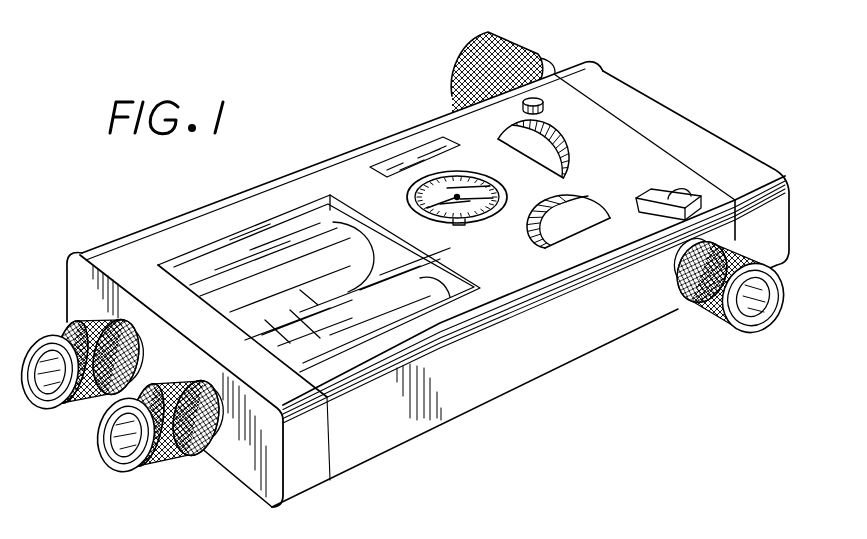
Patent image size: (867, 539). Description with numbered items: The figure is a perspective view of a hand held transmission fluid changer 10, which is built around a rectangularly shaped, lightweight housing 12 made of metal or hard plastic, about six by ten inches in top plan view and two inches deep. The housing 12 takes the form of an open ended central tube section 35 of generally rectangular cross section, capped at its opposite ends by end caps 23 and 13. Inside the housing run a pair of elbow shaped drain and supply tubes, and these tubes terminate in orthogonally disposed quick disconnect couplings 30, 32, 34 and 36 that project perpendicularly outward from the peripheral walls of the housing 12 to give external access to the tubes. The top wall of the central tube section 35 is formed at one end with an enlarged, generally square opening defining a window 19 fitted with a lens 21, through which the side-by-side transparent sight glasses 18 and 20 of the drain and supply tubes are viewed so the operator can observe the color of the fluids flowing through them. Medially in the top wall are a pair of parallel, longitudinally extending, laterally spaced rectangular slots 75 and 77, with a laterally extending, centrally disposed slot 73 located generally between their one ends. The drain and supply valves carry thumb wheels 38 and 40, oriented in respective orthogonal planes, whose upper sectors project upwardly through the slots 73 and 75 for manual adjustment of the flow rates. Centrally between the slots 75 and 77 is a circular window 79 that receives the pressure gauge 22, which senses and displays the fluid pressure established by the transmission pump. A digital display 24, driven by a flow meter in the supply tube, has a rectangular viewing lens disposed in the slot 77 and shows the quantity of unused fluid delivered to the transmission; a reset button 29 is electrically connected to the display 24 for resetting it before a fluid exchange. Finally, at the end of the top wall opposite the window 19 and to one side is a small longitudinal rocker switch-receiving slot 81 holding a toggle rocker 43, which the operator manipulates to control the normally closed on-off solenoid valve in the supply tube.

The hand held transmission fluid changer 10 is at (379, 100).
The housing 12 is at (378, 458).
The end cap 13 is at (783, 232).
The sight glass 18 is at (303, 262).
The window 19 is at (323, 324).
The sight glass 20 is at (425, 304).
The lens 21 is at (183, 263).
The pressure gauge 22 is at (473, 177).
The end cap 23 is at (318, 459).
The digital display 24 is at (453, 147).
The reset button 29 is at (543, 102).
The quick disconnect coupling 30 is at (516, 43).
The quick disconnect coupling 32 is at (701, 312).
The quick disconnect coupling 34 is at (157, 463).
The central tube section 35 is at (523, 365).
The quick disconnect coupling 36 is at (66, 336).
The thumb wheel 38 is at (592, 204).
The thumb wheel 40 is at (579, 162).
The toggle rocker 43 is at (678, 193).
The slot 73 is at (531, 163).
The slot 75 is at (577, 234).
The slot 77 is at (397, 160).
The circular window 79 is at (462, 221).
The rocker switch-receiving slot 81 is at (693, 196).